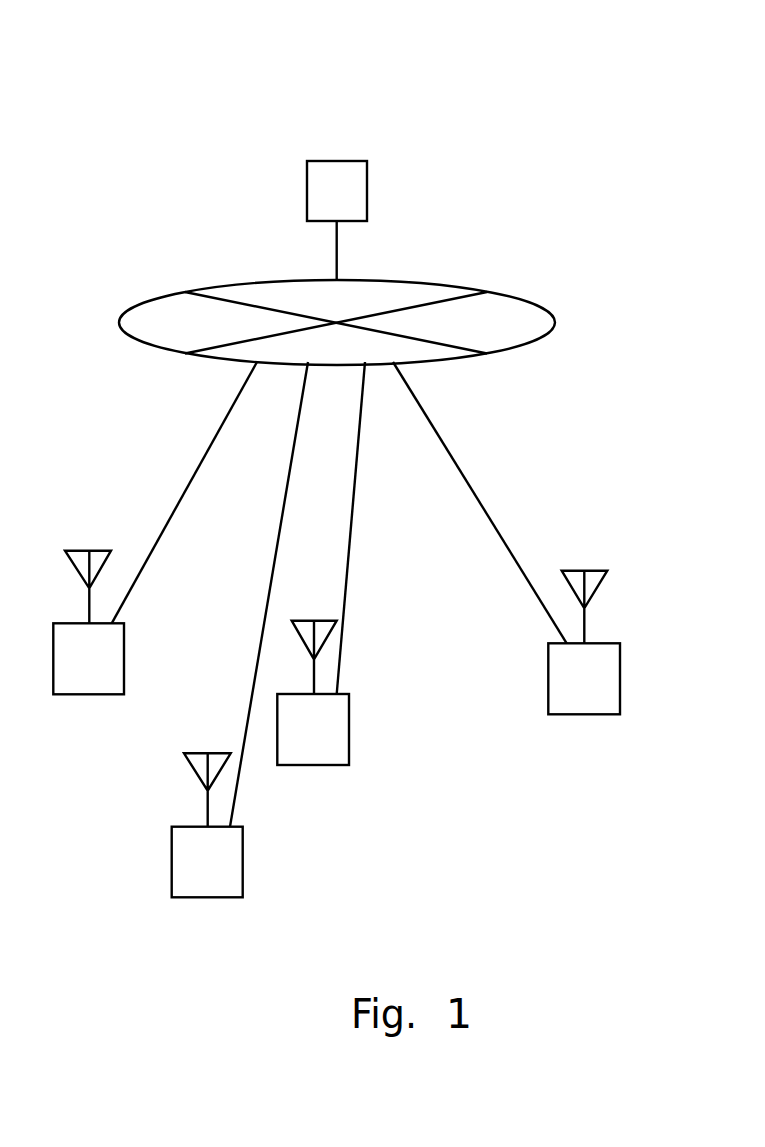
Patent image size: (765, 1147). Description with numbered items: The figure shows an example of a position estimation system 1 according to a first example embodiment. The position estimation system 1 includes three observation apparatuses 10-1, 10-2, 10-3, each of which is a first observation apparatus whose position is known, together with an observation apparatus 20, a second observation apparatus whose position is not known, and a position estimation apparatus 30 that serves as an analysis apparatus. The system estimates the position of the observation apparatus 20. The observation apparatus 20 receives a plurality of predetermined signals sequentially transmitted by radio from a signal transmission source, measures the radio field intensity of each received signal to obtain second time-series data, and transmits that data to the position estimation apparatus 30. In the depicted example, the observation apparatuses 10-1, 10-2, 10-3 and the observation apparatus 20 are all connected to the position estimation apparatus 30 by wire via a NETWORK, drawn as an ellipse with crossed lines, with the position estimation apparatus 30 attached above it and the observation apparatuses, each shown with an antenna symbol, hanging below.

The position estimation system 1 is at (329, 108).
The position estimation apparatus 30 is at (367, 182).
The network NETWORK is at (555, 323).
The observation apparatus 10-1 is at (80, 695).
The observation apparatus 10-2 is at (217, 898).
The observation apparatus 10-3 is at (593, 715).
The observation apparatus 20 is at (323, 766).